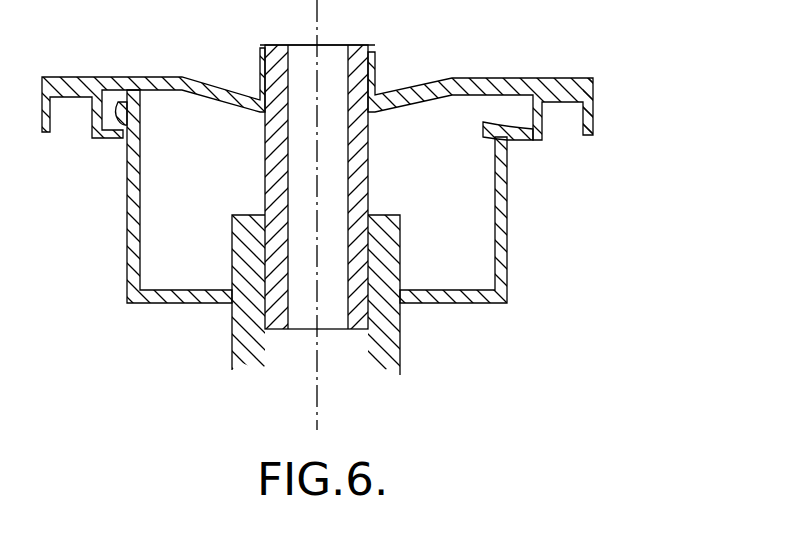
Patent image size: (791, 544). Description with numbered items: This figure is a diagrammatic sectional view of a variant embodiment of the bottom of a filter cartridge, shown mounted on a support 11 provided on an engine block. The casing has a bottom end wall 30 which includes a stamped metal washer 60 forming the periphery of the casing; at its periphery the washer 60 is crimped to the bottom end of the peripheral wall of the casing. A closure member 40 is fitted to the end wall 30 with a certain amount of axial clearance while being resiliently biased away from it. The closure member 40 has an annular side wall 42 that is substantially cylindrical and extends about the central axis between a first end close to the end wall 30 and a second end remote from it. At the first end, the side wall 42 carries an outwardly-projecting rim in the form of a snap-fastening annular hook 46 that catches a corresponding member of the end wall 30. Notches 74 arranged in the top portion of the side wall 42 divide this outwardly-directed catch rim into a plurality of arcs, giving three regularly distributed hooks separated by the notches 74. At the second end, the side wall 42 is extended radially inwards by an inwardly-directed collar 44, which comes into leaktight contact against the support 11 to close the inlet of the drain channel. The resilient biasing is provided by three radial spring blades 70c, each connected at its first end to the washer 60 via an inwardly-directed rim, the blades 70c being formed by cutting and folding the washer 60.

The support 11 is at (400, 347).
The bottom end wall 30 is at (521, 80).
The closure member 40 is at (507, 303).
The annular side wall 42 is at (130, 182).
The inwardly-directed collar 44 is at (178, 303).
The annular hook 46 is at (125, 103).
The stamped metal washer 60 is at (593, 113).
The radial spring blade 70c is at (483, 128).
The notch 74 is at (500, 160).